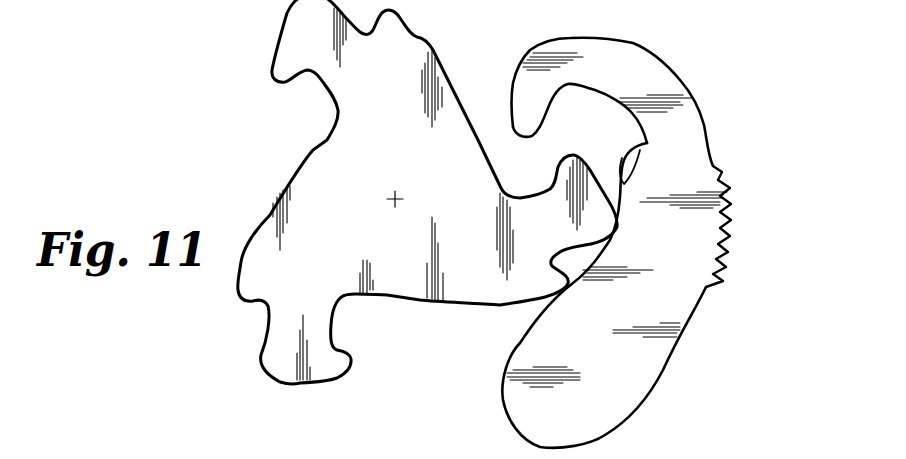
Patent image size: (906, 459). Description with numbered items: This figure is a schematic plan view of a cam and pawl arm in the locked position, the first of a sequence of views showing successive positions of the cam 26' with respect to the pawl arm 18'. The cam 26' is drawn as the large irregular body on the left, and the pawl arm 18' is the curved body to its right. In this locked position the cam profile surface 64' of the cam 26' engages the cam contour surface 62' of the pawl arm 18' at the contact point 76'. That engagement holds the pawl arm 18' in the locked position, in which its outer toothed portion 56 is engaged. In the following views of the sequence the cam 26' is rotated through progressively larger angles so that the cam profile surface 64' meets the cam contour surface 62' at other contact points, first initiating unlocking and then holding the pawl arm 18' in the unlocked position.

The cam 26' is at (400, 192).
The cam profile surface 64' is at (631, 100).
The pawl arm 18' is at (712, 94).
The cam contour surface 62' is at (657, 284).
The contact point 76' is at (728, 190).
The outer toothed portion 56 is at (730, 237).